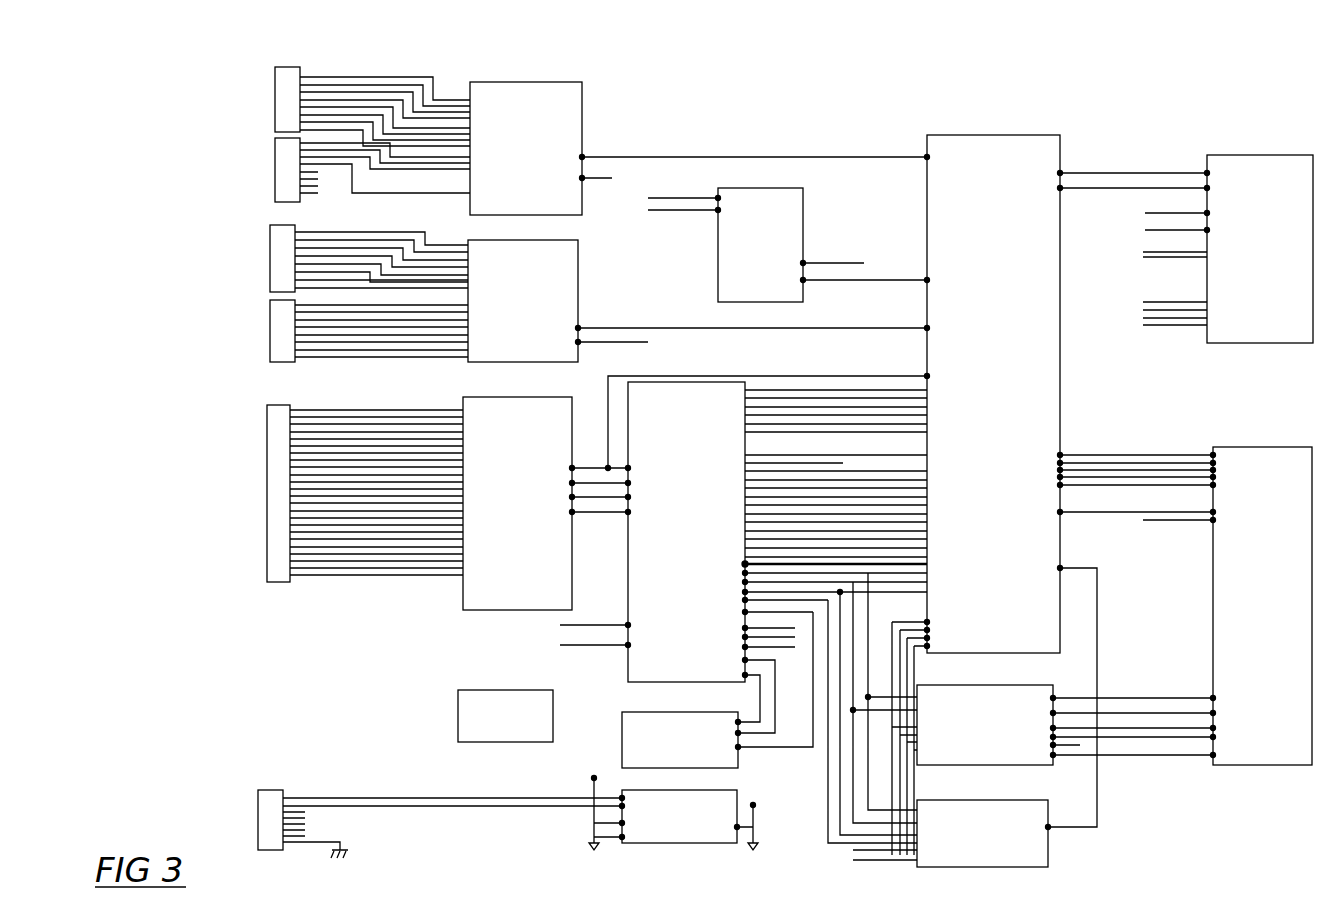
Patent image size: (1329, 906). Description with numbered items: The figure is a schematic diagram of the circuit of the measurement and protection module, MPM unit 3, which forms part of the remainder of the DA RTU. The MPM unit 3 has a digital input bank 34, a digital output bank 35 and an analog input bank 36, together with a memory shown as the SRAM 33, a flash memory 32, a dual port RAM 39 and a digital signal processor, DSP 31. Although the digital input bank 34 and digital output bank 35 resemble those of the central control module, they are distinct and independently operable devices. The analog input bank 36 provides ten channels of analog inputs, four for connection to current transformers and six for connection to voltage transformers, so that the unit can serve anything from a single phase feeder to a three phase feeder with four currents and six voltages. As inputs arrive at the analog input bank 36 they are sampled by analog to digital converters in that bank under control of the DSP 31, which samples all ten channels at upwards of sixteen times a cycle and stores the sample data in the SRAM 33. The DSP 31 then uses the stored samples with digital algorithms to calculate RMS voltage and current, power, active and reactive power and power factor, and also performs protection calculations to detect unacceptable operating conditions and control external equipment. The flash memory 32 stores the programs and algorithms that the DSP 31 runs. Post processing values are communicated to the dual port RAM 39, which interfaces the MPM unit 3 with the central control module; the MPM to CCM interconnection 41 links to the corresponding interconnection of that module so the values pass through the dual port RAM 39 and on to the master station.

The measurement and protection module MPM unit 3 is at (724, 120).
The digital signal processor DSP 31 is at (686, 438).
The flash memory 32 is at (1040, 855).
The memory (SRAM) 33 is at (1240, 330).
The digital input bank 34 is at (562, 121).
The digital output bank 35 is at (560, 284).
The analog input bank 36 is at (475, 600).
The dual port RAM 39 is at (1022, 692).
The MPM to CCM interconnection 41 is at (1252, 752).